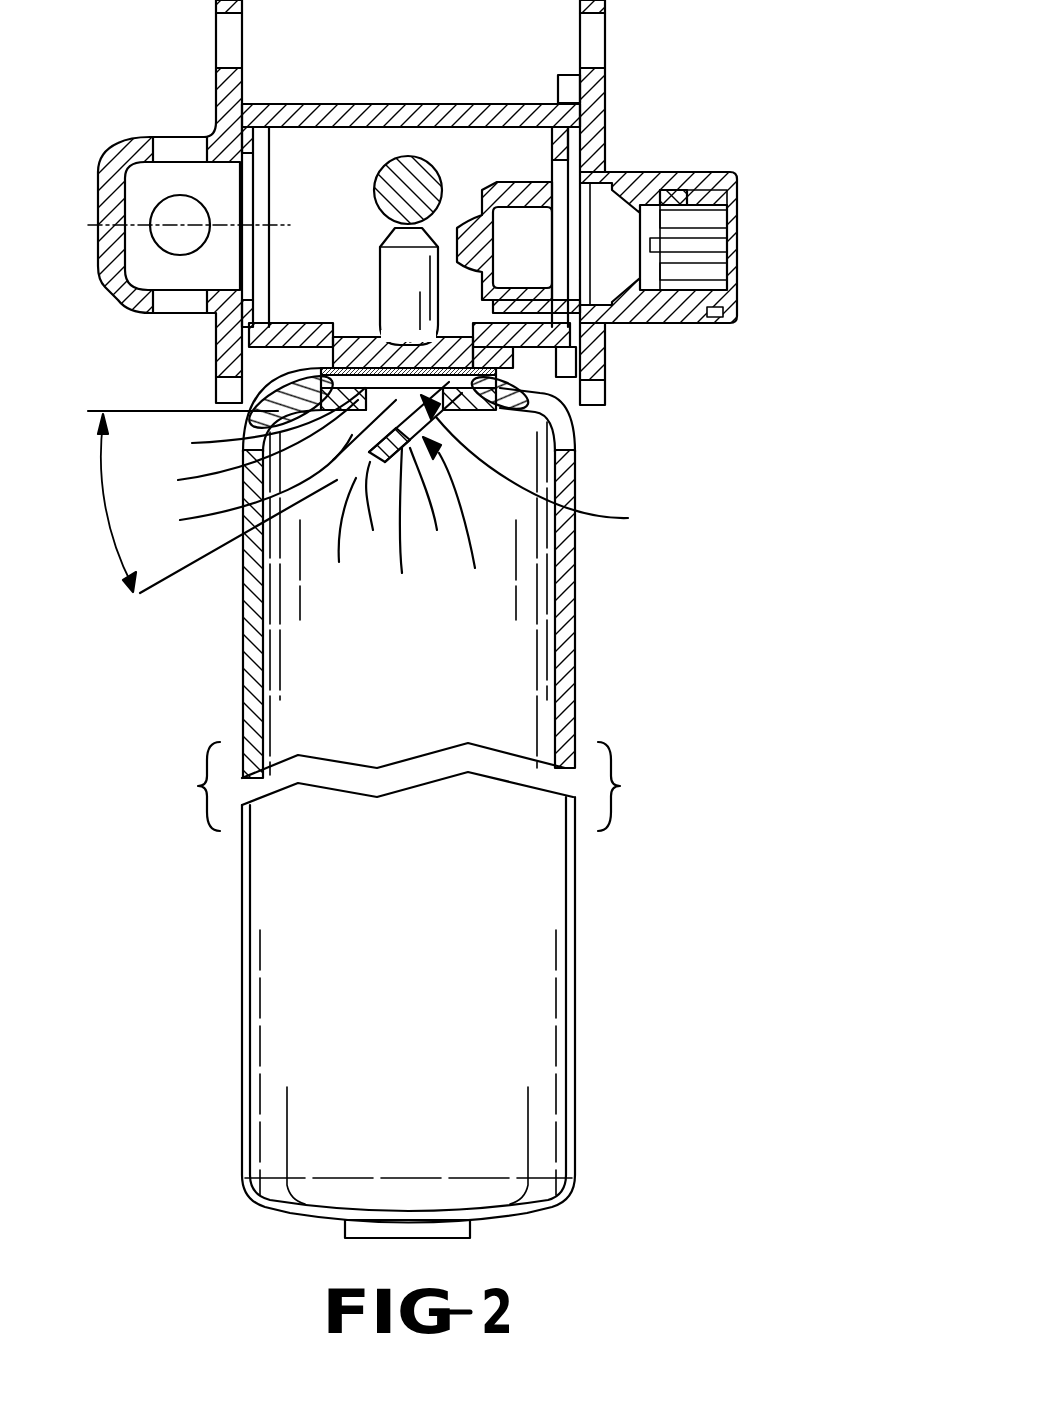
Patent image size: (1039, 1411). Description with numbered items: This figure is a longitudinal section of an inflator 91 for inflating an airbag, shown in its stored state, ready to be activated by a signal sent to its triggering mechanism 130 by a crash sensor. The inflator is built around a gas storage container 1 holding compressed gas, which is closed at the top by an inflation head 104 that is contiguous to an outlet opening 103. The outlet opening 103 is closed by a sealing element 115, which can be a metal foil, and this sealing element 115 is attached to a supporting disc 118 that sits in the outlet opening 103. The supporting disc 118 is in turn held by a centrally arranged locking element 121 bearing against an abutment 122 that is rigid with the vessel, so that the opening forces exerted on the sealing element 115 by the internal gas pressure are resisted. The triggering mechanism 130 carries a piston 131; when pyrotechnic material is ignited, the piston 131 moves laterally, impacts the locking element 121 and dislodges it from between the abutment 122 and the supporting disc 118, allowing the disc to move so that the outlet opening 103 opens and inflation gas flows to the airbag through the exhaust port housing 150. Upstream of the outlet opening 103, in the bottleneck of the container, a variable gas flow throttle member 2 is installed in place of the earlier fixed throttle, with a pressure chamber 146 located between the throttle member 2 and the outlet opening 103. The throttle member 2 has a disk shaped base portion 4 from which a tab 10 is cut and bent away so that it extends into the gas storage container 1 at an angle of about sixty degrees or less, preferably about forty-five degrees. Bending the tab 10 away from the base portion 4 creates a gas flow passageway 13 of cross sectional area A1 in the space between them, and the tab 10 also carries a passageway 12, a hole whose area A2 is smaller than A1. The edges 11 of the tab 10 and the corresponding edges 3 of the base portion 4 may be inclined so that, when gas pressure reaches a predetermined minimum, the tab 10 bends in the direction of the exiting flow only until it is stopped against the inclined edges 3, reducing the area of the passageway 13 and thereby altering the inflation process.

The gas storage container 1 is at (320, 654).
The variable gas flow throttle member 2 is at (254, 449).
The edge of the disk shaped base portion 3 is at (251, 486).
The disk shaped base portion 4 is at (266, 424).
The tab 10 is at (405, 526).
The edge of the tab 11 is at (372, 513).
The passageway 12 is at (433, 506).
The gas flow passageway 13 is at (337, 537).
The inflator 91 is at (605, 628).
The outlet opening 103 is at (556, 405).
The inflation head 104 is at (328, 118).
The sealing element 115 is at (372, 358).
The supporting disc 118 is at (500, 340).
The locking element 121 is at (397, 277).
The abutment 122 is at (400, 178).
The triggering mechanism 130 is at (668, 183).
The piston 131 is at (522, 198).
The pressure chamber 146 is at (313, 382).
The exhaust port housing 150 is at (128, 150).
The cross sectional area of the gas flow passageway A1 is at (543, 468).
The cross sectional area of the tab passageway A2 is at (463, 524).